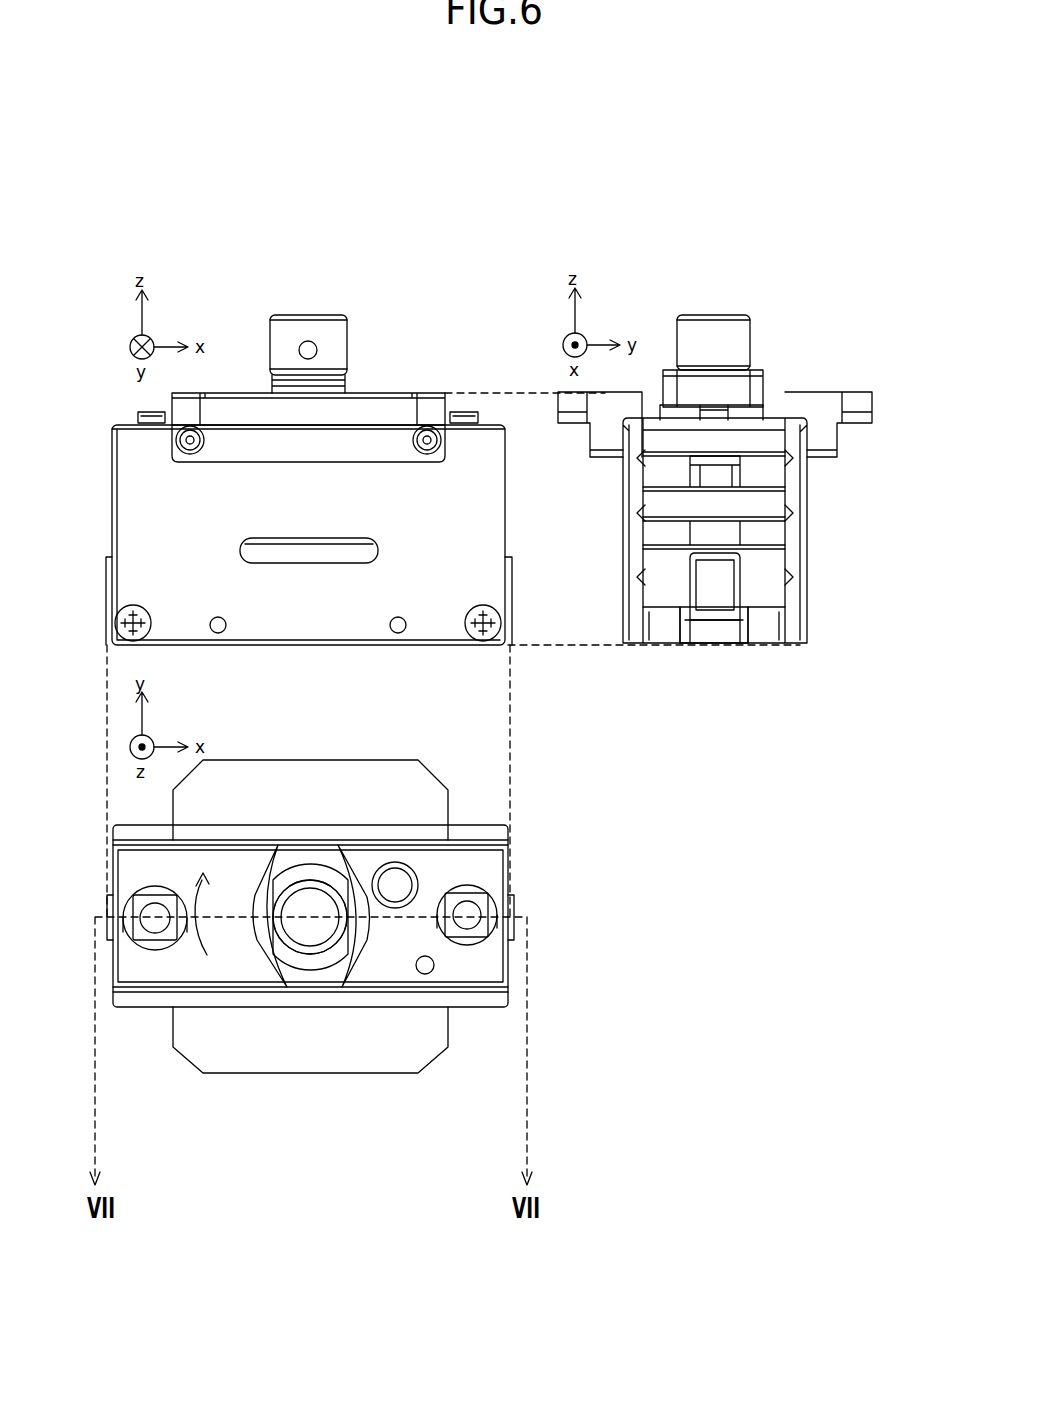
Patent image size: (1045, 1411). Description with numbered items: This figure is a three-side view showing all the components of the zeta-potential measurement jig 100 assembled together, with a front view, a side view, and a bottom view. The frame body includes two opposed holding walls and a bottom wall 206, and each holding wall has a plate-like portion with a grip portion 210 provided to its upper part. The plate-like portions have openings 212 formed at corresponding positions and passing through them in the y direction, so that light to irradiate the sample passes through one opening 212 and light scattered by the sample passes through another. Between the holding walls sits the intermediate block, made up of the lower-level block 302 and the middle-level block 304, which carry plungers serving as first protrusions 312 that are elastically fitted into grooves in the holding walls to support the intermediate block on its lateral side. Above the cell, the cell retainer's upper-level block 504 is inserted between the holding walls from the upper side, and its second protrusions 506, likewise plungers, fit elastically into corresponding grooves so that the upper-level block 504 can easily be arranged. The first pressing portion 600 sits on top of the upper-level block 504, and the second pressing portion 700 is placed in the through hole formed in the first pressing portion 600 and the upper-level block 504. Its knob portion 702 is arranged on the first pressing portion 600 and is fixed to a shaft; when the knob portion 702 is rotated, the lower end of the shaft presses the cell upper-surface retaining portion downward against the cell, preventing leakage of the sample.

The zeta-potential measurement jig 100 is at (501, 793).
The bottom wall 206 is at (713, 633).
The grip portion 210 is at (383, 400).
The opening 212 is at (300, 551).
The lower-level block 302 is at (760, 593).
The middle-level block 304 is at (667, 508).
The first protrusion 312 is at (787, 513).
The upper-level block 504 is at (763, 442).
The second protrusion 506 is at (787, 457).
The first pressing portion 600 is at (655, 407).
The second pressing portion 700 is at (485, 679).
The knob portion 702 is at (333, 328).